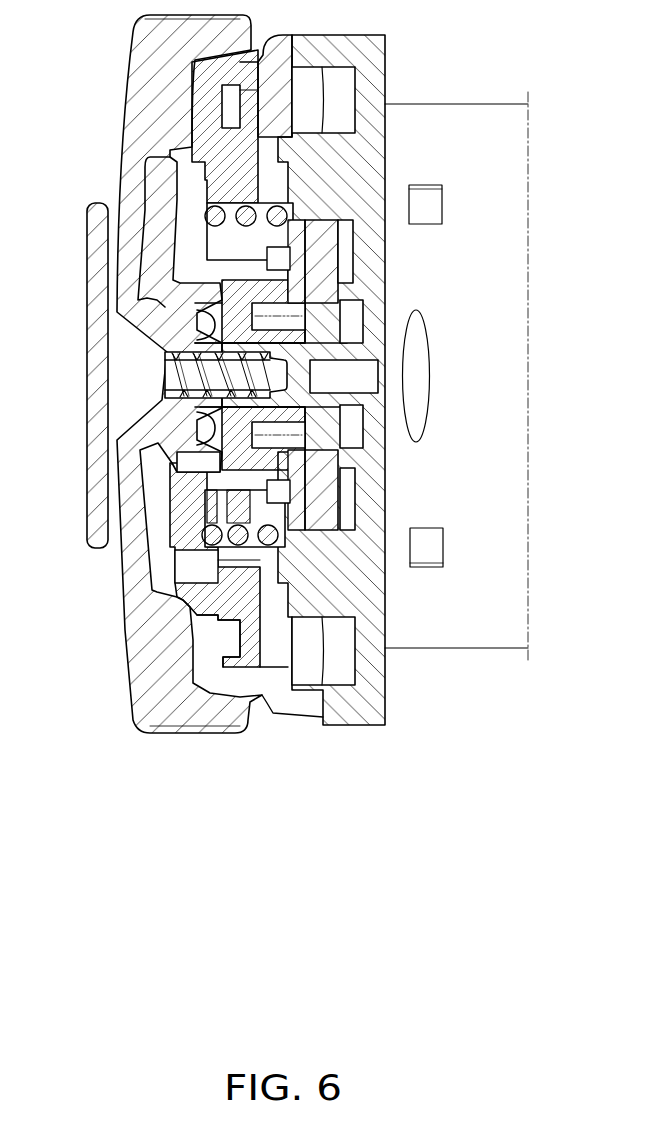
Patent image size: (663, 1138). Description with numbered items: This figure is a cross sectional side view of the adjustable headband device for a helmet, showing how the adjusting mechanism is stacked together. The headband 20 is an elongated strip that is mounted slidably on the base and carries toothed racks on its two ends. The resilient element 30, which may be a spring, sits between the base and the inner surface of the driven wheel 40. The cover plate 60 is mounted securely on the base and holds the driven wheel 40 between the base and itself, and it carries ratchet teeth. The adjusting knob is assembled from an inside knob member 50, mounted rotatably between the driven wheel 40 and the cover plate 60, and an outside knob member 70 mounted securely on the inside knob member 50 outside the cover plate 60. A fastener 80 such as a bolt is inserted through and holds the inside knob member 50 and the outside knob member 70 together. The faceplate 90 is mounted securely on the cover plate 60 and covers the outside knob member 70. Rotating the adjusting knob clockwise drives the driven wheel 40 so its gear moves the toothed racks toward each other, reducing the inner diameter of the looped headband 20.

The headband 20 is at (325, 270).
The resilient element 30 is at (240, 535).
The driven wheel 40 is at (180, 512).
The inside knob member 50 is at (210, 618).
The cover plate 60 is at (317, 708).
The outside knob member 70 is at (143, 688).
The fastener 80 is at (138, 372).
The faceplate 90 is at (100, 548).